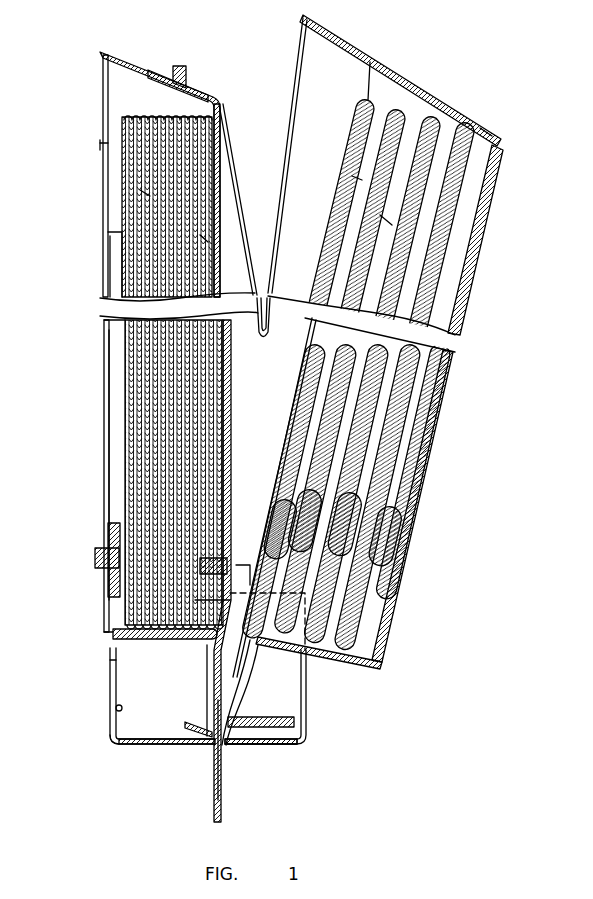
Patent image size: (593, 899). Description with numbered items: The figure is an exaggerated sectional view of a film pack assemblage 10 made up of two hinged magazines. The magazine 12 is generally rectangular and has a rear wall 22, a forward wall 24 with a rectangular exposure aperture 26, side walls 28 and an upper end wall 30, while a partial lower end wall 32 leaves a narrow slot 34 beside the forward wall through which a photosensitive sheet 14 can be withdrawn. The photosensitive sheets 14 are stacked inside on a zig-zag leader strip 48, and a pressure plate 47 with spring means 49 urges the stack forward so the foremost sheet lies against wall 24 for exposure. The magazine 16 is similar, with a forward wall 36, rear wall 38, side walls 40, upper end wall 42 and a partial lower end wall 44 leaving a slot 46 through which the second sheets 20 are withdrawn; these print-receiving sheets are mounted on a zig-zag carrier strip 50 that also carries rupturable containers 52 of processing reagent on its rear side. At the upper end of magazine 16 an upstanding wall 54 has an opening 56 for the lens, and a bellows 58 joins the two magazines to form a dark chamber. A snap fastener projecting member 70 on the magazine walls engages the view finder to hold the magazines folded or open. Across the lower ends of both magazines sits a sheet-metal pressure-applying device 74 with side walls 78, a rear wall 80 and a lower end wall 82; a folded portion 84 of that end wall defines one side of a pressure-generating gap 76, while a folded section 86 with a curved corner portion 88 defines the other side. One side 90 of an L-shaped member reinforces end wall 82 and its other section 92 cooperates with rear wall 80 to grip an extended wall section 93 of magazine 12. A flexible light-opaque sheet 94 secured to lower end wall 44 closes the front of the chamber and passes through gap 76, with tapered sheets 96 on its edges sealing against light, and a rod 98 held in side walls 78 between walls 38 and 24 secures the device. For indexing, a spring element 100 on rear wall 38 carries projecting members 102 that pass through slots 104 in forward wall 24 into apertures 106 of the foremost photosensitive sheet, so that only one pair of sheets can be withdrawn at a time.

The film pack assemblage 10 is at (488, 284).
The magazine 12 is at (103, 354).
The photosensitive sheets 14 is at (214, 360).
The magazine 16 is at (462, 336).
The second sheets 20 is at (372, 222).
The rear wall 22 is at (105, 292).
The forward wall 24 is at (224, 130).
The exposure aperture 26 is at (233, 172).
The side walls 28 is at (118, 250).
The upper end wall 30 is at (100, 72).
The lower end wall 32 is at (160, 642).
The slot 34 is at (204, 652).
The forward wall 36 is at (449, 382).
The rear wall 38 is at (282, 328).
The side walls 40 is at (466, 226).
The upper end wall 42 is at (470, 102).
The partial lower end wall 44 is at (368, 668).
The slot 46 is at (266, 686).
The pressure plate 47 is at (126, 416).
The leader strip 48 is at (145, 190).
The spring means 49 is at (103, 147).
The carrier strip 50 is at (356, 180).
The rupturable containers 52 is at (372, 500).
The upstanding wall 54 is at (362, 70).
The opening 56 is at (340, 28).
The bellows 58 is at (297, 57).
The projecting member 70 is at (185, 62).
The pressure-applying device 74 is at (138, 754).
The pressure-generating gap 76 is at (212, 752).
The side walls 78 is at (302, 736).
The rear wall 80 is at (110, 660).
The lower end wall 82 is at (158, 750).
The folded portion 84 is at (184, 724).
The folded section 86 is at (288, 728).
The curved corner portion 88 is at (240, 712).
The side of L-shaped member 90 is at (124, 742).
The section of L-shaped member 92 is at (112, 722).
The extended wall section 93 is at (108, 690).
The flexible light-opaque sheet 94 is at (224, 764).
The tapered sheets 96 is at (205, 674).
The rod 98 is at (308, 710).
The spring element 100 is at (242, 570).
The projecting members 102 is at (240, 560).
The slots 104 is at (225, 604).
The apertures 106 is at (195, 560).